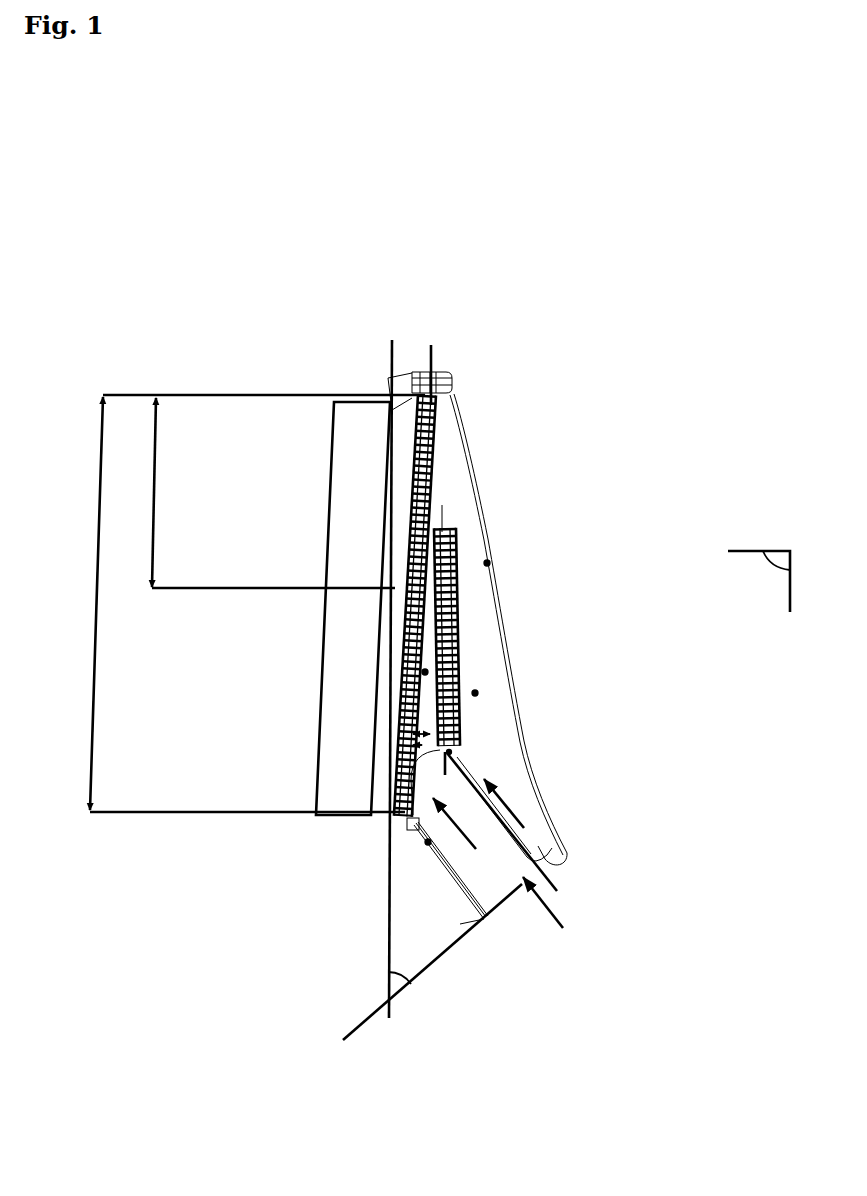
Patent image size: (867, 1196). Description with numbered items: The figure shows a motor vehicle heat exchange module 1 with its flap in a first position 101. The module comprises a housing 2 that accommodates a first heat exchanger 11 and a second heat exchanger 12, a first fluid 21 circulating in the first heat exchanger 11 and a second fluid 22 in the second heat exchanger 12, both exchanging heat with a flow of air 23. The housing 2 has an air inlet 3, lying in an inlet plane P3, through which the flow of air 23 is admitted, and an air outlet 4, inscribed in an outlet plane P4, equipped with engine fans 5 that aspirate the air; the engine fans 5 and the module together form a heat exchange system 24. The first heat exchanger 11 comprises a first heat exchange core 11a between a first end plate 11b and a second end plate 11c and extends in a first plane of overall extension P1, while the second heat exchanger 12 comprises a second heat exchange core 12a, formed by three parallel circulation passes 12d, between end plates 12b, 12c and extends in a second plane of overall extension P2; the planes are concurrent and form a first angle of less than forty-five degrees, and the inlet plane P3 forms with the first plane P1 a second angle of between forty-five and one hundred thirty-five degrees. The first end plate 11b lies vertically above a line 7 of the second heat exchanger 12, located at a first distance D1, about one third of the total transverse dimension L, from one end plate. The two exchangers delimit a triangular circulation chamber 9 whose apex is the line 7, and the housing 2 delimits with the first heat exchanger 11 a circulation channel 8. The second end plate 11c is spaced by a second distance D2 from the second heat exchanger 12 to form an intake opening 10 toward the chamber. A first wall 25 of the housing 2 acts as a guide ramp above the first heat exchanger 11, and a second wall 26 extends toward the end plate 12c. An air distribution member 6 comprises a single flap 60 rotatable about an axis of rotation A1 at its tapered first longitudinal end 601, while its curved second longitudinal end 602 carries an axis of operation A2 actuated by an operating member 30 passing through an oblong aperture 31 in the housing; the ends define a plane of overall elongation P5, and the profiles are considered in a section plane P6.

The heat exchange module 1 is at (564, 527).
The housing 2 is at (520, 742).
The air inlet 3 is at (527, 884).
The air outlet 4 is at (381, 577).
The engine fans 5 is at (348, 613).
The air distribution member 6 is at (517, 873).
The line 7 is at (411, 524).
The circulation channel 8 is at (475, 693).
The circulation chamber 9 is at (425, 672).
The intake opening 10 is at (412, 747).
The first heat exchanger 11 is at (457, 620).
The first heat exchange core 11a is at (463, 600).
The first end plate 11b is at (478, 522).
The second end plate 11c is at (455, 748).
The second heat exchanger 12 is at (431, 471).
The second heat exchange core 12a is at (401, 512).
The first end plate 12b is at (421, 372).
The second end plate 12c is at (400, 817).
The circulation passes 12d is at (401, 458).
The first fluid 21 is at (457, 663).
The second fluid 22 is at (431, 493).
The flow of air 23 is at (345, 645).
The heat exchange system 24 is at (241, 432).
The first wall 25 is at (487, 563).
The second wall 26 is at (428, 842).
The operating member 30 is at (533, 847).
The oblong aperture 31 is at (548, 858).
The flap 60 is at (497, 860).
The first position 101 is at (677, 775).
The first longitudinal end 601 is at (470, 768).
The second longitudinal end 602 is at (455, 925).
The axis of rotation A1 is at (452, 754).
The axis of operation A2 is at (550, 870).
The first distance D1 is at (259, 493).
The second distance D2 is at (413, 734).
The total transverse dimension L is at (247, 603).
The first plane of overall extension P1 is at (442, 507).
The second plane of overall extension P2 is at (444, 364).
The inlet plane P3 is at (426, 962).
The outlet plane P4 is at (379, 671).
The plane of overall elongation P5 is at (553, 888).
The section plane P6 is at (759, 581).